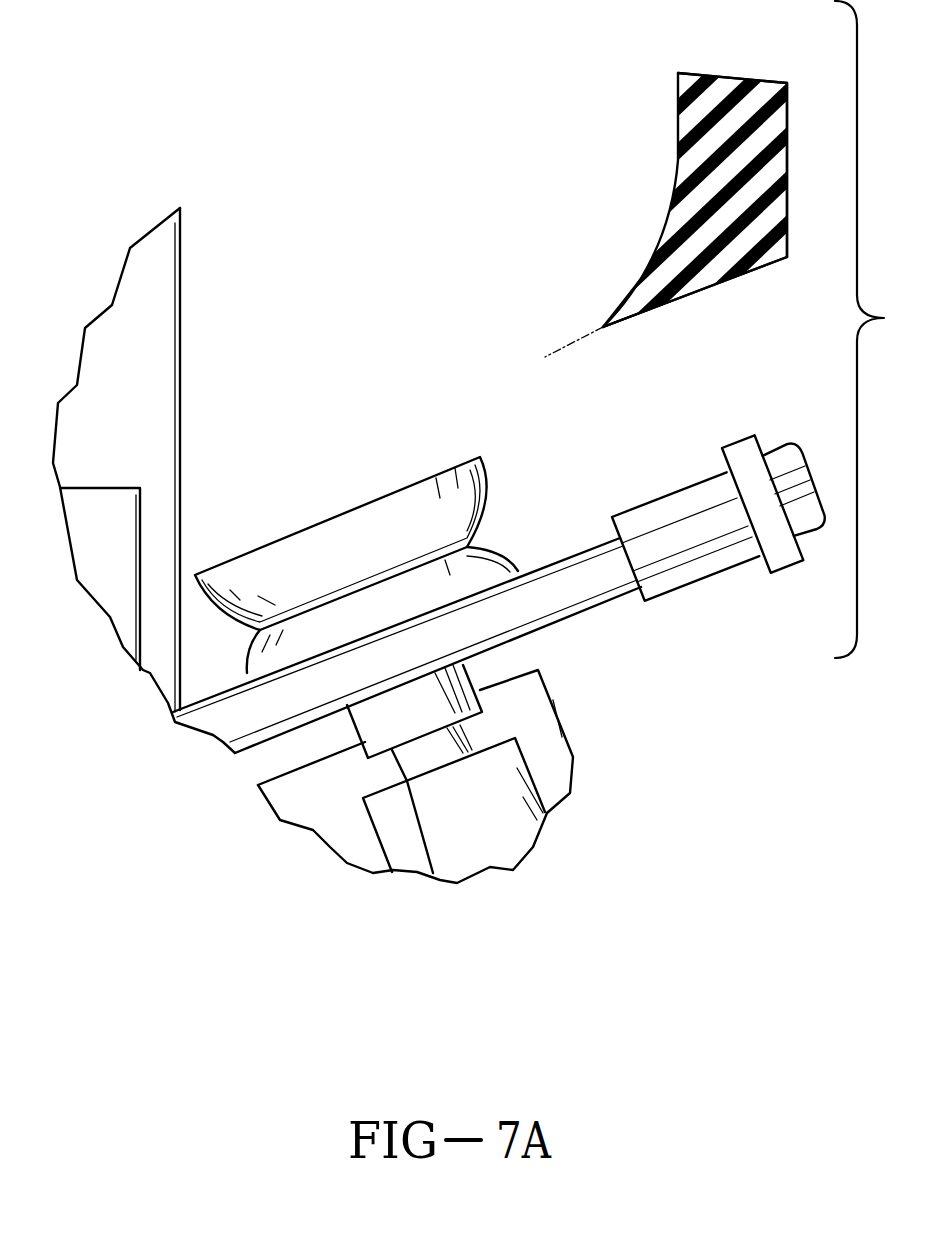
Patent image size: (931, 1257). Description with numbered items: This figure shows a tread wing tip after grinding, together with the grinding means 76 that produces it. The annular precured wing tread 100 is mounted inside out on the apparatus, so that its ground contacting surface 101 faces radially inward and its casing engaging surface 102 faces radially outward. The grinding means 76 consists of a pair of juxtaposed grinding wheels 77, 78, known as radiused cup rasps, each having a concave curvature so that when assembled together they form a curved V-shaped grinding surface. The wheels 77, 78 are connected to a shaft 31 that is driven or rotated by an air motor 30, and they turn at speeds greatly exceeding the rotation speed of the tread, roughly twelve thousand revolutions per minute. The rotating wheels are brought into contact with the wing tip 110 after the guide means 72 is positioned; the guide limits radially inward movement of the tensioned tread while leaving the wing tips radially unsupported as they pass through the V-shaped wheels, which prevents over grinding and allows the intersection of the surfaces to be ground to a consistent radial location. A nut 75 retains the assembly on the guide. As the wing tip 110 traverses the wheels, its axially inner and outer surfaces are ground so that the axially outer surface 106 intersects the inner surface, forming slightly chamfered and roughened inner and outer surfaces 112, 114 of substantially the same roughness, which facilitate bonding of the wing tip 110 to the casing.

The air motor 30 is at (468, 833).
The shaft 31 is at (462, 752).
The guide means 72 is at (686, 575).
The nut 75 is at (793, 567).
The grinding means 76 is at (388, 561).
The grinding wheel 77 is at (488, 474).
The grinding wheel 78 is at (497, 546).
The annular precured wing tread 100 is at (679, 127).
The ground contacting surface 101 is at (788, 106).
The casing engaging surface 102 is at (678, 83).
The axially outer surface 106 is at (747, 273).
The wing tip 110 is at (621, 323).
The inner surface 112 is at (600, 326).
The outer surface 114 is at (600, 332).